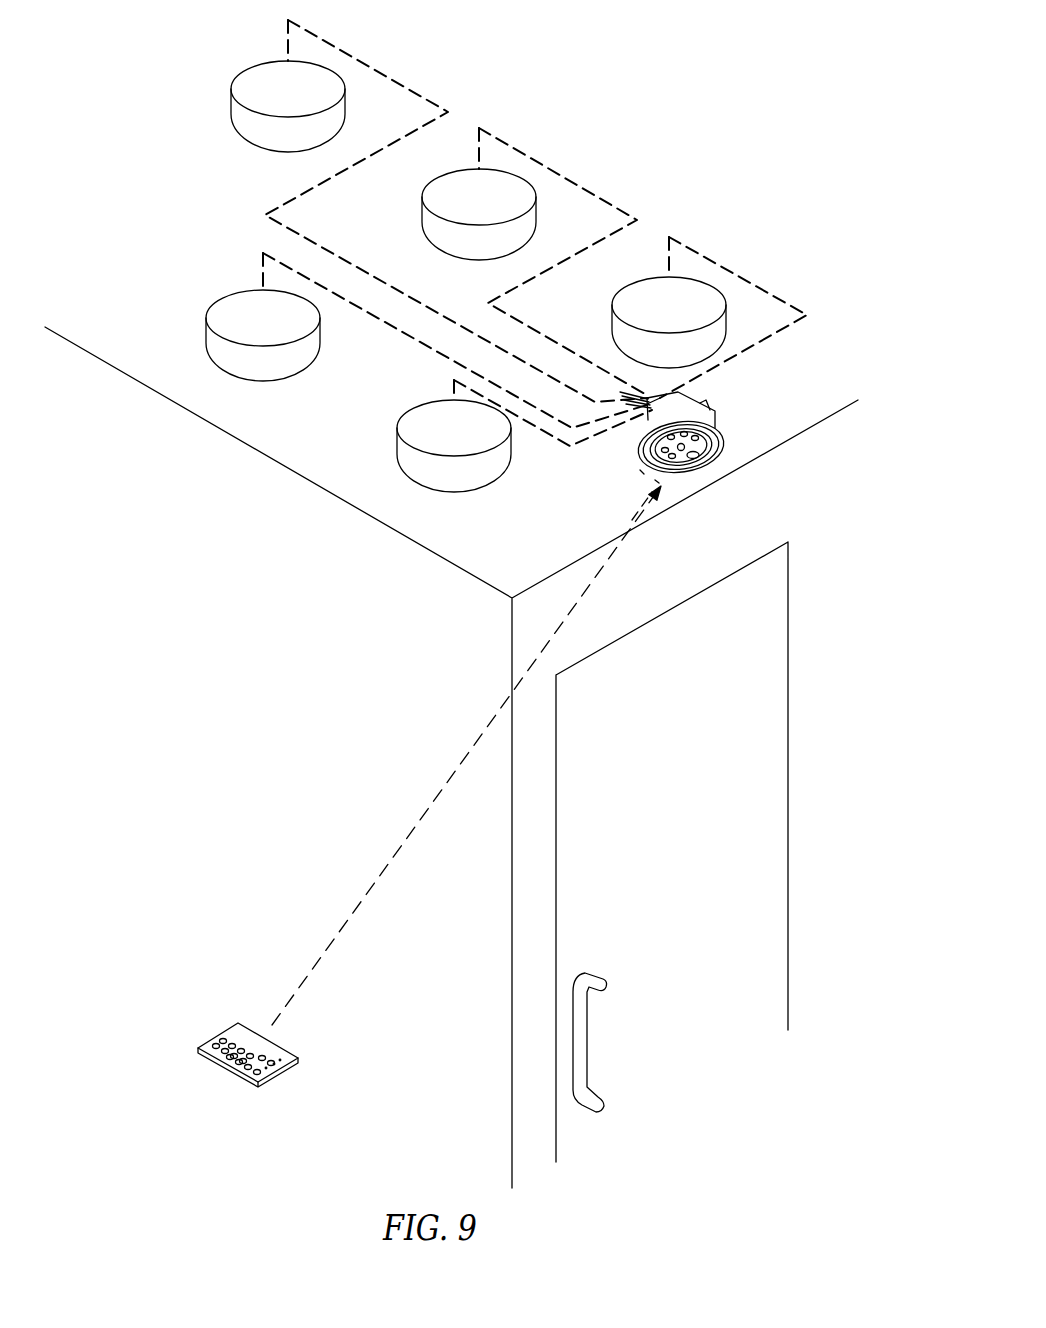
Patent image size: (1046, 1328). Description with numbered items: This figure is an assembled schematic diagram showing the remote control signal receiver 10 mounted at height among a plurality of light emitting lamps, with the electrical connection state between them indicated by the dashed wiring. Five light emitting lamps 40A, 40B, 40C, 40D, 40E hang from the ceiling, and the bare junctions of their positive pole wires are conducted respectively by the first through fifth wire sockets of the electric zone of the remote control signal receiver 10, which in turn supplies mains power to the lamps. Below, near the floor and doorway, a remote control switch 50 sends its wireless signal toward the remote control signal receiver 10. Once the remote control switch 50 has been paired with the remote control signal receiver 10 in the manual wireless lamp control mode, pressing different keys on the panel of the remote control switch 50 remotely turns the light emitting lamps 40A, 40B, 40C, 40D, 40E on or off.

The remote control signal receiver 10 is at (735, 447).
The light emitting lamp 40A is at (427, 470).
The light emitting lamp 40B is at (238, 363).
The light emitting lamp 40C is at (327, 82).
The light emitting lamp 40D is at (520, 192).
The light emitting lamp 40E is at (698, 298).
The remote control switch 50 is at (230, 1037).